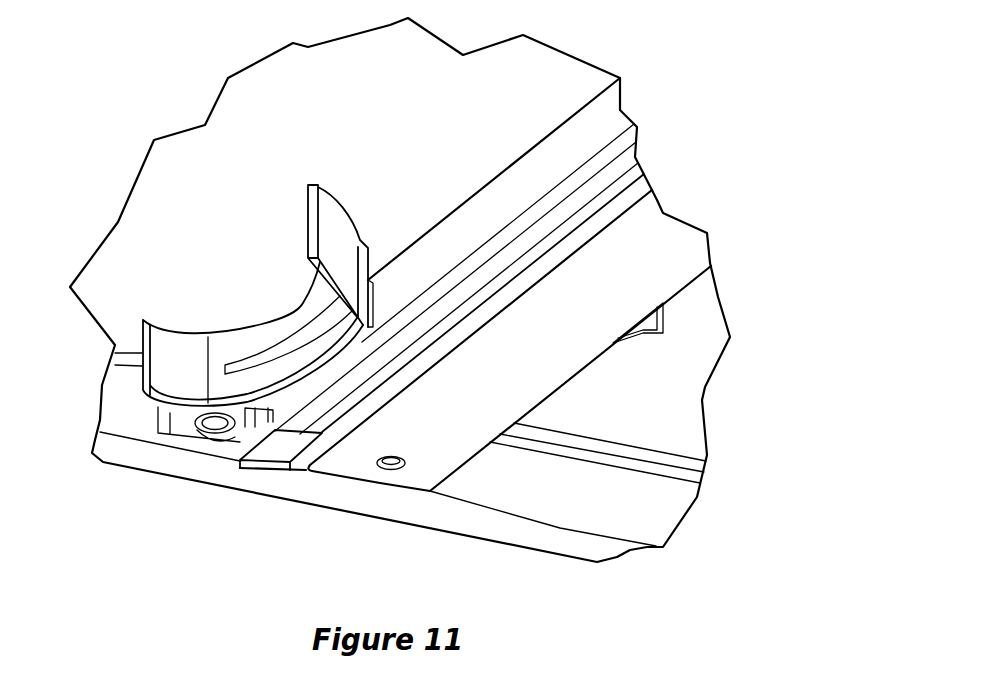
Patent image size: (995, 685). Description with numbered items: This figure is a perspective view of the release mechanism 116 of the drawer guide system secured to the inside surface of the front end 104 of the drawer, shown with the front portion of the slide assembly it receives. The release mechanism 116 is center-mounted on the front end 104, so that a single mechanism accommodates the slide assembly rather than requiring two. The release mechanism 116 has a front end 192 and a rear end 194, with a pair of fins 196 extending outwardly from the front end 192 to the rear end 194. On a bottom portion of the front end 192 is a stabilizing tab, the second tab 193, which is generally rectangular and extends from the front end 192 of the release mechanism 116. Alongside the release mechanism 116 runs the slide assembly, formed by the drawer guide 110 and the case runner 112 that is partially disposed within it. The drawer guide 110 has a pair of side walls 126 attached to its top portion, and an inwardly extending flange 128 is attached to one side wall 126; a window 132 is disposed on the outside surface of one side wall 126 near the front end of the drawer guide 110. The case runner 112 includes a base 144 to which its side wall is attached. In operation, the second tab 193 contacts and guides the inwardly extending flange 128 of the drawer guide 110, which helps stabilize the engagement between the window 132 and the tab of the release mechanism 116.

The front end 104 is at (118, 413).
The drawer guide 110 is at (459, 220).
The case runner 112 is at (508, 365).
The release mechanism 116 is at (260, 339).
The side wall 126 is at (513, 178).
The inwardly extending flange 128 is at (330, 407).
The window 132 is at (380, 303).
The base 144 is at (597, 311).
The front end 192 is at (160, 418).
The stabilizing tab 193 is at (280, 453).
The rear end 194 is at (317, 190).
The fins 196 is at (185, 398).